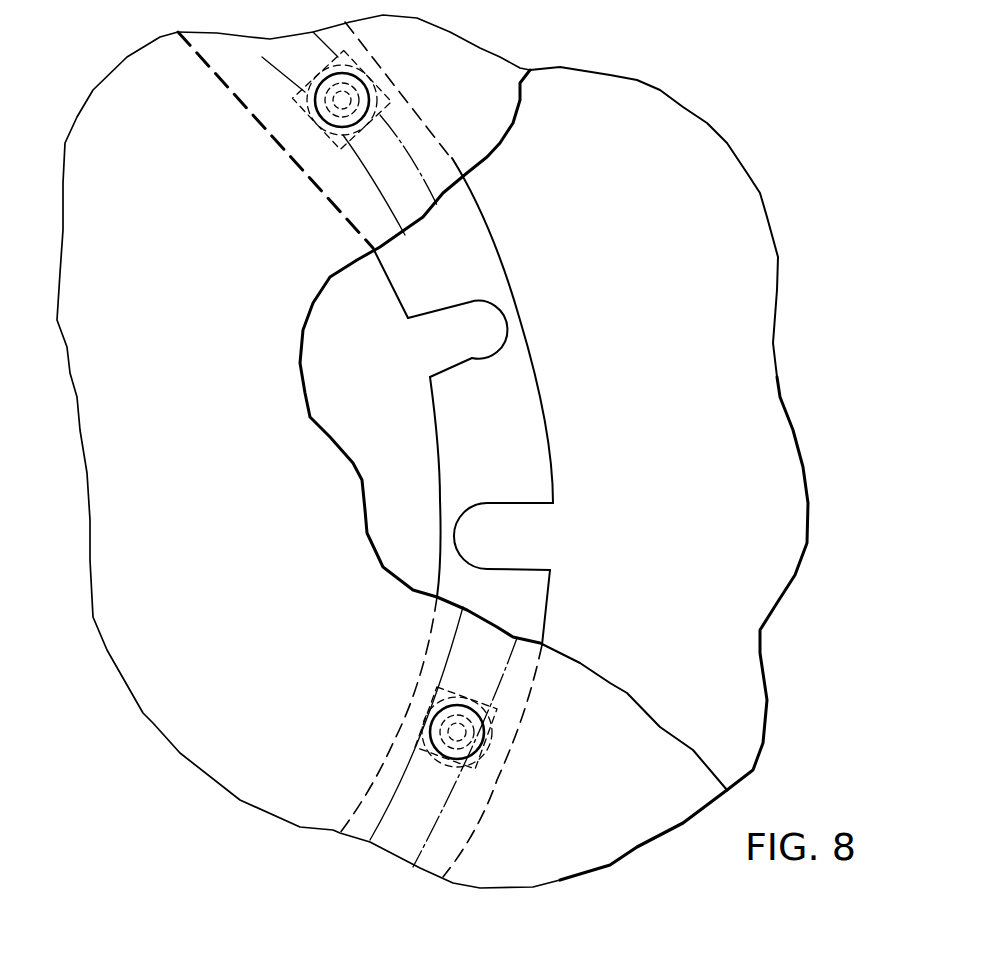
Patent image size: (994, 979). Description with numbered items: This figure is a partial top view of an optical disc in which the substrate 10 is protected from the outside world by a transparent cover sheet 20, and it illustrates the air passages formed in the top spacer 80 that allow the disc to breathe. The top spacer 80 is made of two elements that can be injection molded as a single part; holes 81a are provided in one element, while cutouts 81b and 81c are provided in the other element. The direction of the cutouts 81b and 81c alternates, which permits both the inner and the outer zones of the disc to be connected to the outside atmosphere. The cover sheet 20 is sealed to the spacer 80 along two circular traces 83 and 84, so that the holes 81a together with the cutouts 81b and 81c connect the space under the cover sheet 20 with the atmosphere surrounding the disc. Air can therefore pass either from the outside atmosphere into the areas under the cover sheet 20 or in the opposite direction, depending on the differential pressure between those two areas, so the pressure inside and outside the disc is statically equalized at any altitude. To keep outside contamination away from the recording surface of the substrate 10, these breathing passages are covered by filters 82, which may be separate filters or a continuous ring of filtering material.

The substrate 10 is at (743, 345).
The cover sheet 20 is at (222, 482).
The top spacer 80 is at (446, 141).
The holes 81a is at (313, 112).
The cutouts 81b is at (527, 518).
The cutouts 81c is at (442, 335).
The filters 82 is at (370, 92).
The circular trace 83 is at (392, 803).
The circular trace 84 is at (430, 842).